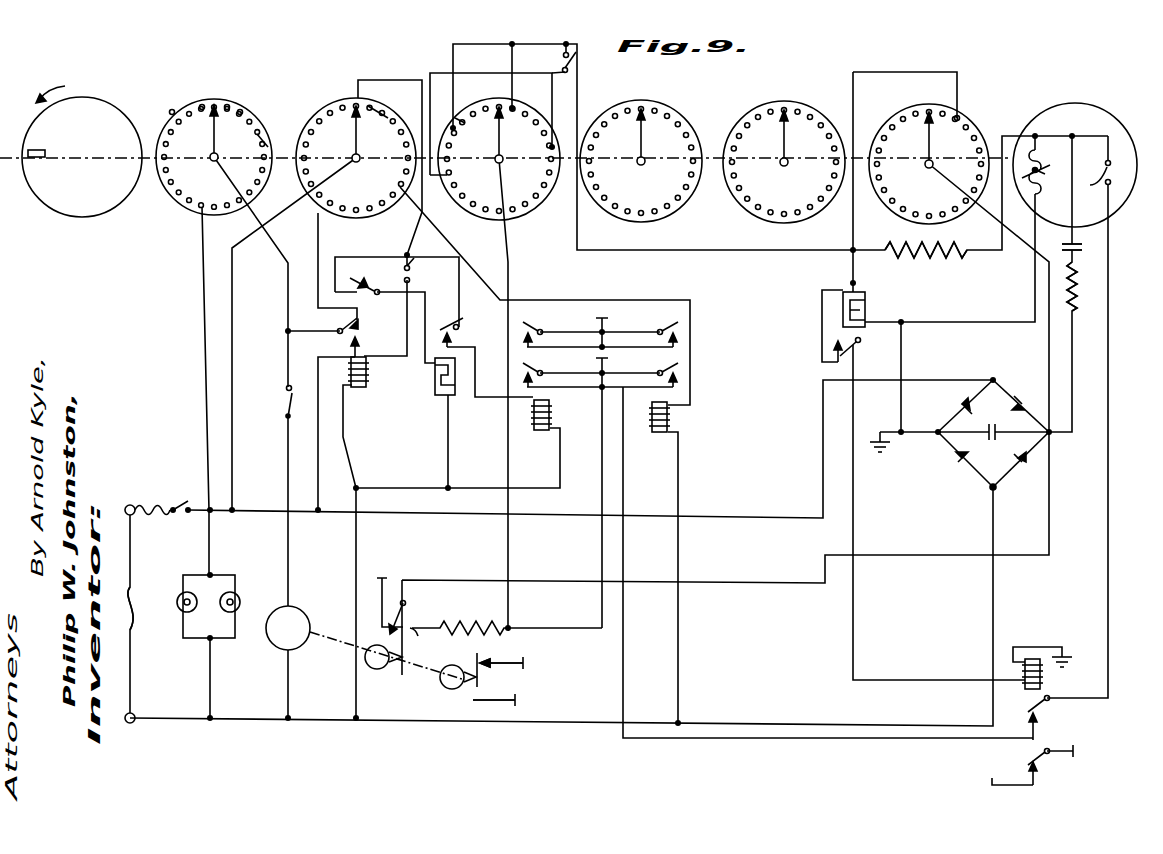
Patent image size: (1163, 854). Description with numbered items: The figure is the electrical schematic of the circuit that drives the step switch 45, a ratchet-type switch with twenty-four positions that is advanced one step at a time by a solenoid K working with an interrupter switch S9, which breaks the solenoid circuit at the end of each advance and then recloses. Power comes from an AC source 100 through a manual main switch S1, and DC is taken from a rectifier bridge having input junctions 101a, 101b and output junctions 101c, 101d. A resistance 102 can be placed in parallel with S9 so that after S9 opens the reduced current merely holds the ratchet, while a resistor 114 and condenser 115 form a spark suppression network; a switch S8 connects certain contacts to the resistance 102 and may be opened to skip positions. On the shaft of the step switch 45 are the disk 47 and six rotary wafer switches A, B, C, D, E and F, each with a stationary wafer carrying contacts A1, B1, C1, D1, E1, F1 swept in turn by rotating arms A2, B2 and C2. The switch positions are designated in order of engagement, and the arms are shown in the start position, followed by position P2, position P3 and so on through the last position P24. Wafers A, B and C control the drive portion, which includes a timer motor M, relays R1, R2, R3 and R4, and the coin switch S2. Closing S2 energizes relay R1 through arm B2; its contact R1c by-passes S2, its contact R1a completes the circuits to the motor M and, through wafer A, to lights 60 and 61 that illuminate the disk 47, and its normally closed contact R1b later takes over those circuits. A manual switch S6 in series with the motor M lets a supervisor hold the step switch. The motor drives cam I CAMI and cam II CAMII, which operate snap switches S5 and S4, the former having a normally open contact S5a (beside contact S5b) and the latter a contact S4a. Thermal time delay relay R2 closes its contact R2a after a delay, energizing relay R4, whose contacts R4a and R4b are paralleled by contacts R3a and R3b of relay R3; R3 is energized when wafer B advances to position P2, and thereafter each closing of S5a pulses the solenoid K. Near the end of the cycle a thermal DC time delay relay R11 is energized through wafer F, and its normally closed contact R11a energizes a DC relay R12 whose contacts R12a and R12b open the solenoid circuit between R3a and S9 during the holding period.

The disk 47 is at (84, 102).
The step switch position P2 is at (202, 106).
The step switch position P3 is at (190, 113).
The step switch position P24 is at (228, 106).
The rotary wafer switch A is at (248, 168).
The wafer contacts A1 is at (260, 142).
The rotating arm A2 is at (228, 139).
The rotary wafer switch B is at (368, 193).
The wafer contacts B1 is at (390, 117).
The rotating arm B2 is at (358, 141).
The rotary wafer switch C is at (517, 117).
The wafer contacts C1 is at (472, 113).
The rotating arm C2 is at (500, 141).
The rotary wafer switch D is at (667, 130).
The wafer contacts D1 is at (628, 110).
The rotary wafer switch E is at (802, 125).
The wafer contacts E1 is at (768, 110).
The rotary wafer switch F is at (955, 130).
The wafer contacts F1 is at (943, 112).
The step switch 45 is at (1070, 114).
The solenoid K is at (1039, 166).
The manual switch S8 is at (572, 60).
The interrupter switch S9 is at (1095, 181).
The condenser 115 is at (1095, 247).
The resistor 114 is at (1080, 278).
The resistance 102 is at (927, 258).
The thermal DC time delay relay R11 is at (870, 298).
The normally closed contact R11a is at (852, 350).
The input junction 101a is at (994, 379).
The input junction 101b is at (992, 488).
The output junction 101c is at (938, 430).
The output junction 101d is at (1050, 434).
The relay R1 is at (366, 372).
The normally open contact R1a is at (356, 340).
The normally closed contact R1b is at (358, 318).
The normally open contact R1c is at (360, 276).
The coin switch S2 is at (420, 270).
The manual switch S6 is at (286, 398).
The thermal time delay relay R2 is at (450, 395).
The normally open contact R2a is at (459, 327).
The relay R4 is at (551, 416).
The normally open contact R4a is at (545, 368).
The normally open contact R4b is at (541, 325).
The relay R3 is at (669, 419).
The normally open contact R3a is at (690, 375).
The normally open contact R3b is at (690, 332).
The manual main switch S1 is at (180, 498).
The AC source 100 is at (137, 612).
The light 60 is at (178, 597).
The light 61 is at (238, 597).
The timer motor M is at (288, 628).
The cam I CAMI is at (380, 667).
The cam II CAMII is at (445, 688).
The snap switch S5 is at (408, 625).
The normally open contact S5a is at (416, 634).
The switch contact S5b is at (404, 602).
The snap switch S4 is at (483, 700).
The switch contact S4a is at (518, 668).
The DC relay R12 is at (1042, 680).
The normally closed contact R12a is at (1040, 708).
The relay contact R12b is at (1040, 762).